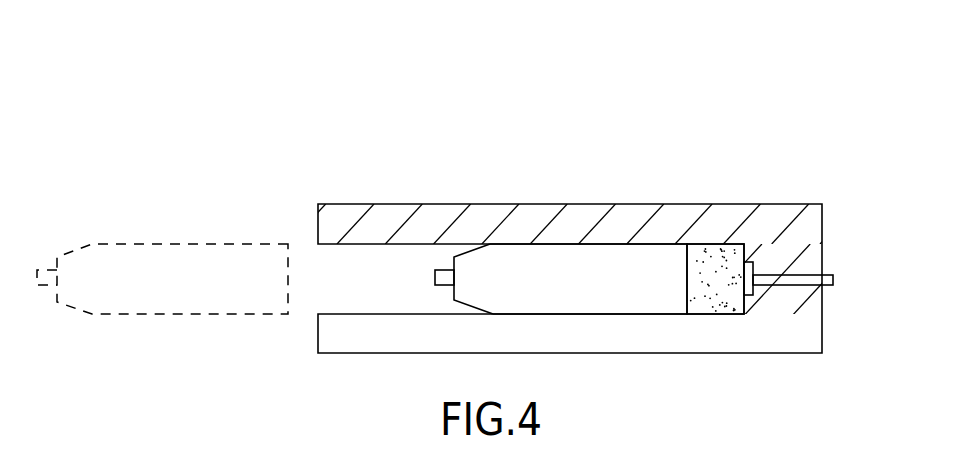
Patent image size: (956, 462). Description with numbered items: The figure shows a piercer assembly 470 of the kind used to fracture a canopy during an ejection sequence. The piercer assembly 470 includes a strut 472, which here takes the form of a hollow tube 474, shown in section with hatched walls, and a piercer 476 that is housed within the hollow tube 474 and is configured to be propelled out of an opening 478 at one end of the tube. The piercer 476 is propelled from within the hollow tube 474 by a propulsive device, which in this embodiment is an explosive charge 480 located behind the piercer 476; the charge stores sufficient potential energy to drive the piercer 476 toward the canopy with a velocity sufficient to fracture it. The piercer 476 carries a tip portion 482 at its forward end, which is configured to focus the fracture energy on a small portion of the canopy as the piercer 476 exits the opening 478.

The piercer assembly 470 is at (166, 145).
The strut 472 is at (560, 208).
The hollow tube 474 is at (608, 220).
The piercer 476 is at (642, 277).
The opening 478 is at (296, 240).
The explosive charge 480 is at (723, 257).
The tip portion 482 is at (447, 272).